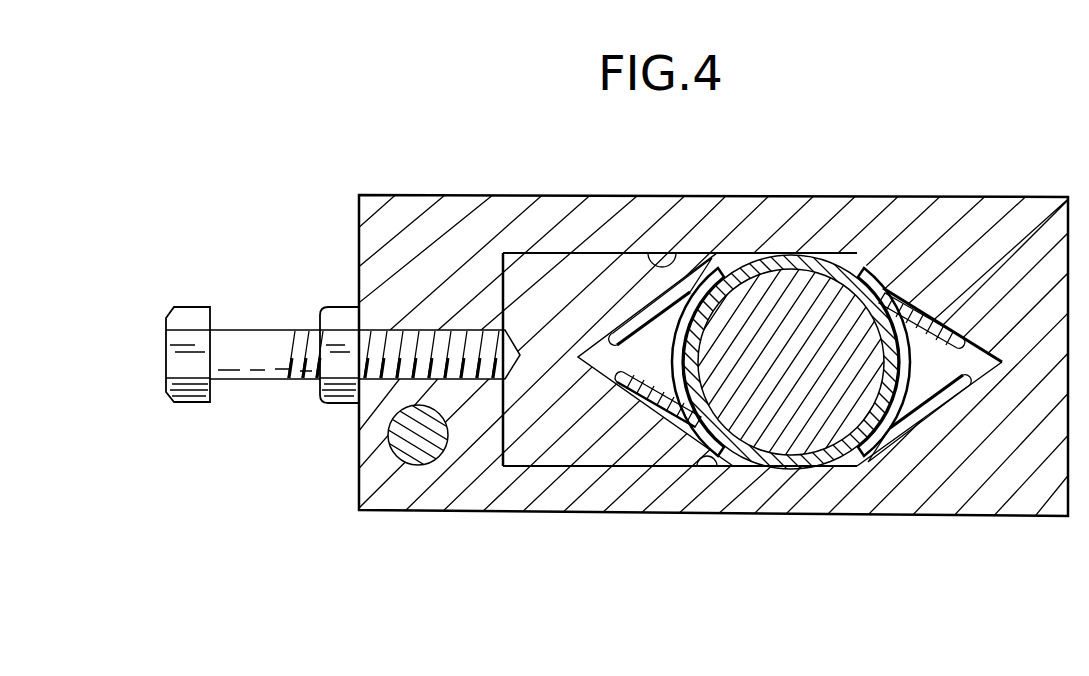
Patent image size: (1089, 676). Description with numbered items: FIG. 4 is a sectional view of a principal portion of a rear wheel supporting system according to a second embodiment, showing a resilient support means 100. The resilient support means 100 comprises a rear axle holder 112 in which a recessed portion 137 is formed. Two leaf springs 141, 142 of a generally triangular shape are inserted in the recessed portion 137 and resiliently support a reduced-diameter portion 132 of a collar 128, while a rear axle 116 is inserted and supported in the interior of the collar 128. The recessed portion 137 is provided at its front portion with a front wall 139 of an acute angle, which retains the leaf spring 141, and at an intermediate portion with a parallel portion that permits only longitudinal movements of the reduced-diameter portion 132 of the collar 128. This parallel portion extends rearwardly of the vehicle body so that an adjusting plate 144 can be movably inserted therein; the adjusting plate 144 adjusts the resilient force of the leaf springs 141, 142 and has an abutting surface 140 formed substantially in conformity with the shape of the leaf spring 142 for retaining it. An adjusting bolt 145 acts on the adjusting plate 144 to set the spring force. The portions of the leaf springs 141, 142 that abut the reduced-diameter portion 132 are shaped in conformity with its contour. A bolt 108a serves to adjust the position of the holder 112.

The resilient support means 100 is at (871, 545).
The rear axle holder 112 is at (569, 210).
The adjusting plate 144 is at (584, 452).
The abutting surface 140 is at (598, 358).
The front wall 139 is at (962, 366).
The leaf spring 141 is at (912, 255).
The leaf spring 142 is at (692, 428).
The recessed portion 137 is at (670, 265).
The rear axle 116 is at (808, 288).
The collar 128 is at (797, 465).
The reduced-diameter portion 132 is at (791, 362).
The adjusting bolt 145 is at (385, 333).
The bolt 108a is at (408, 447).